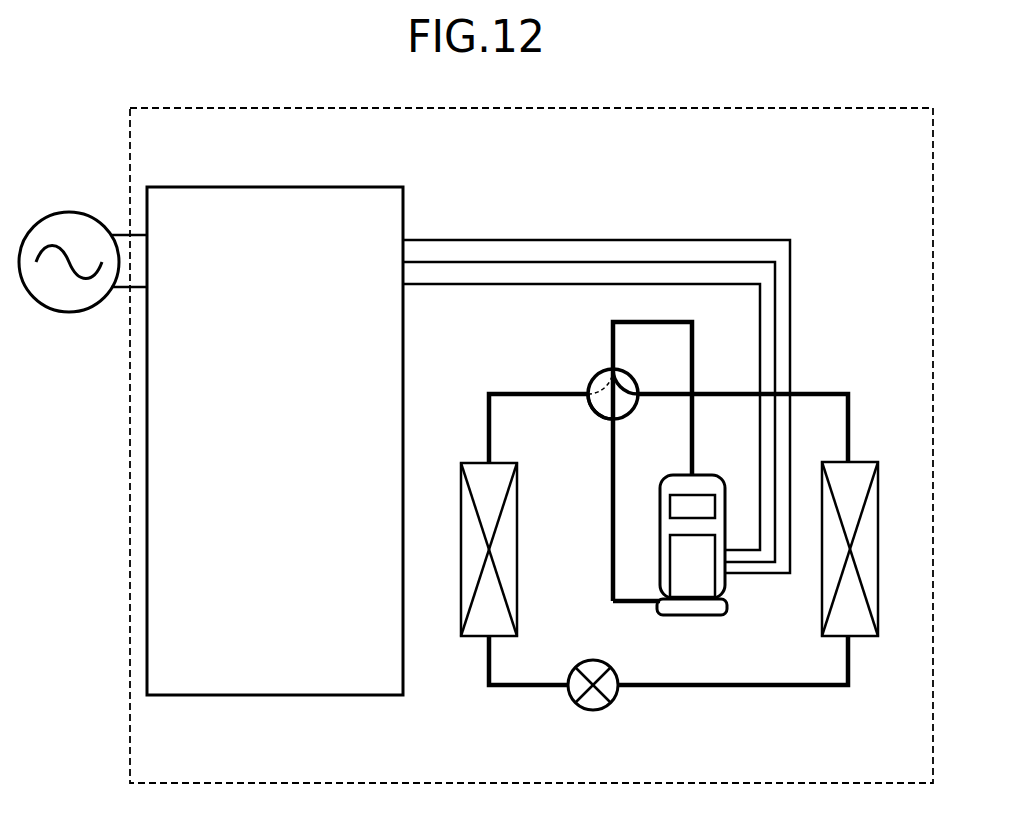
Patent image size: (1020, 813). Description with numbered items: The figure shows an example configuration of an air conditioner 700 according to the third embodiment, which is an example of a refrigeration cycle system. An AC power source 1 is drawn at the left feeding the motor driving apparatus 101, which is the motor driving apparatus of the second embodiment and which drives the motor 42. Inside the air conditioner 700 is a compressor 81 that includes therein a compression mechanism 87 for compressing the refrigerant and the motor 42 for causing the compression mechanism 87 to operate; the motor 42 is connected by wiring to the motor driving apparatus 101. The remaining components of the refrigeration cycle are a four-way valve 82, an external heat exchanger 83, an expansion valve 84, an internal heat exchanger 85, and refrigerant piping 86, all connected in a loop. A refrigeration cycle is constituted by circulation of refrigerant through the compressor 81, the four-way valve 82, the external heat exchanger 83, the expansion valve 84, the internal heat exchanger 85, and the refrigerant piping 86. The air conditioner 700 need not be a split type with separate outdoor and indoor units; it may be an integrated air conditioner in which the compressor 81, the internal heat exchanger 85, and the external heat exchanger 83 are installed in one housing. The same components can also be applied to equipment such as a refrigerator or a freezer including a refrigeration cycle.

The AC power source 1 is at (68, 213).
The motor driving apparatus 101 is at (330, 187).
The air conditioner 700 is at (864, 108).
The compressor 81 is at (730, 600).
The four-way valve 82 is at (598, 375).
The external heat exchanger 83 is at (470, 640).
The expansion valve 84 is at (593, 710).
The internal heat exchanger 85 is at (860, 462).
The refrigerant piping 86 is at (731, 688).
The compression mechanism 87 is at (684, 508).
The motor 42 is at (692, 583).